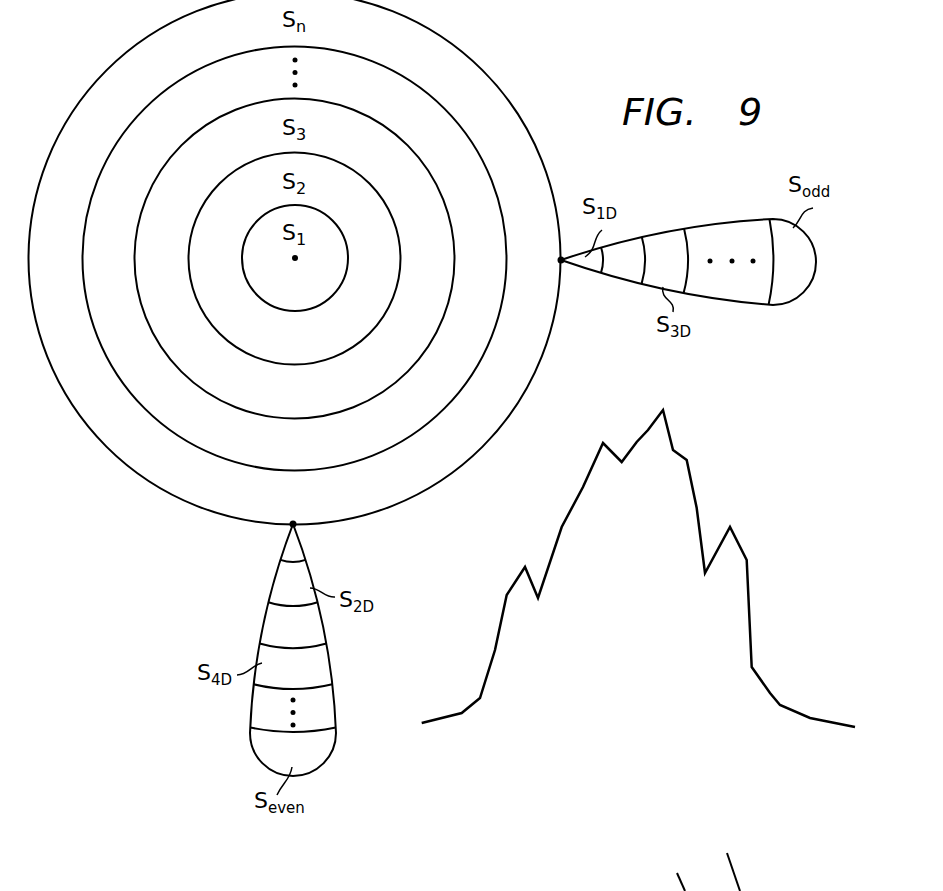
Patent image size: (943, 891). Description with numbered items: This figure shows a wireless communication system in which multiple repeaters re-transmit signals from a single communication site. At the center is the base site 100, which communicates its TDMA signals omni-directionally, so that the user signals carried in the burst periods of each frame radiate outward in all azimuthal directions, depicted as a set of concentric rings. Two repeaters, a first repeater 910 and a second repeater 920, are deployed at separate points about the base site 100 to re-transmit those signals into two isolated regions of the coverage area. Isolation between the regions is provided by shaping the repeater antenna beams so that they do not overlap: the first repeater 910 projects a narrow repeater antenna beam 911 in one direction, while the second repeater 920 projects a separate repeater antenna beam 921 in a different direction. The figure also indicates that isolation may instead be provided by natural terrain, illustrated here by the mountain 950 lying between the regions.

The base site 100 is at (292, 259).
The repeater 910 is at (563, 263).
The repeater antenna beam 911 is at (739, 303).
The repeater 920 is at (285, 527).
The repeater antenna beam 921 is at (249, 712).
The mountain 950 is at (749, 583).